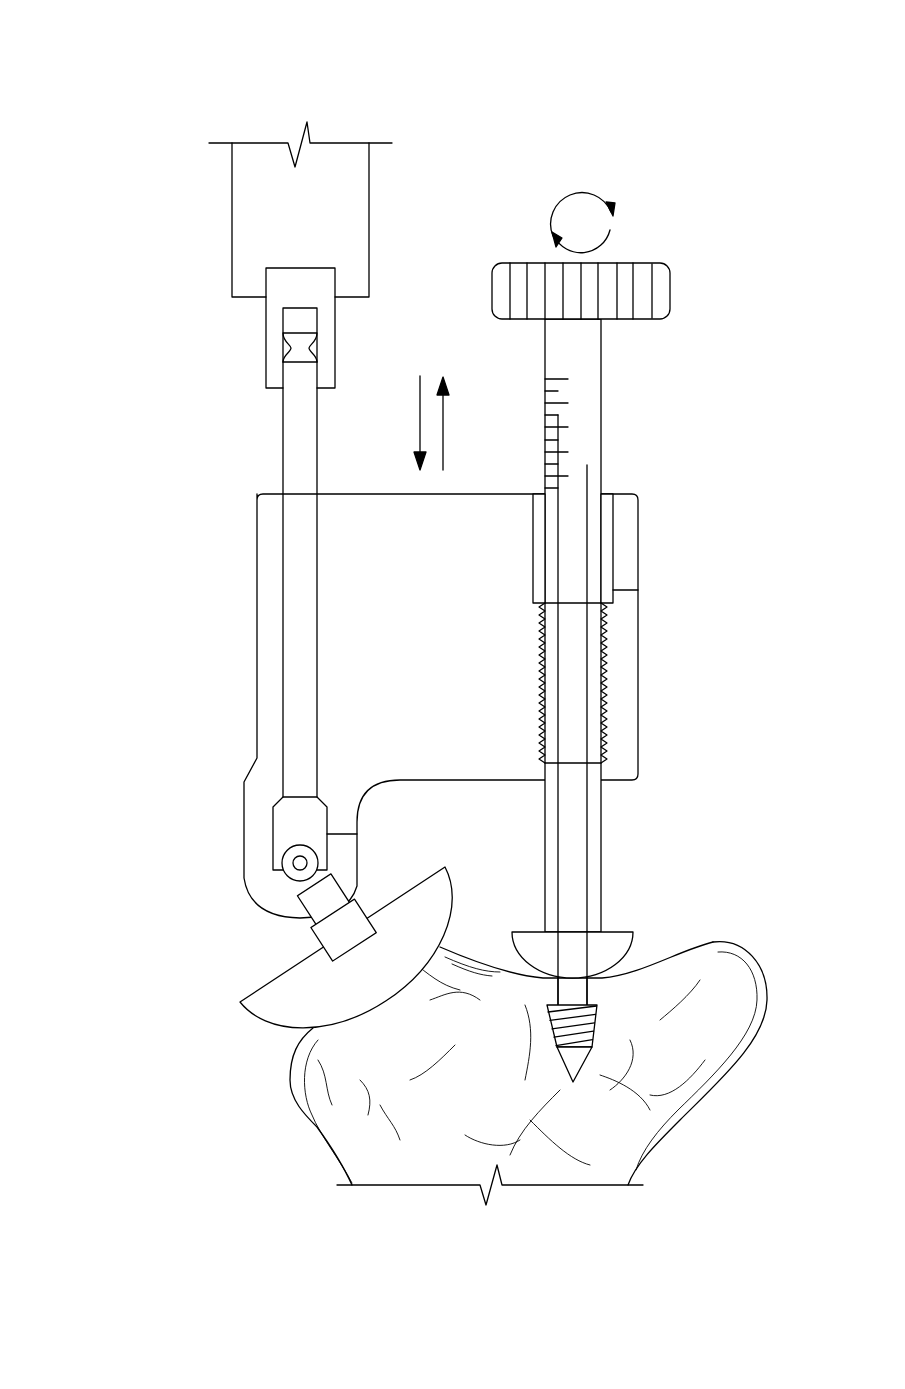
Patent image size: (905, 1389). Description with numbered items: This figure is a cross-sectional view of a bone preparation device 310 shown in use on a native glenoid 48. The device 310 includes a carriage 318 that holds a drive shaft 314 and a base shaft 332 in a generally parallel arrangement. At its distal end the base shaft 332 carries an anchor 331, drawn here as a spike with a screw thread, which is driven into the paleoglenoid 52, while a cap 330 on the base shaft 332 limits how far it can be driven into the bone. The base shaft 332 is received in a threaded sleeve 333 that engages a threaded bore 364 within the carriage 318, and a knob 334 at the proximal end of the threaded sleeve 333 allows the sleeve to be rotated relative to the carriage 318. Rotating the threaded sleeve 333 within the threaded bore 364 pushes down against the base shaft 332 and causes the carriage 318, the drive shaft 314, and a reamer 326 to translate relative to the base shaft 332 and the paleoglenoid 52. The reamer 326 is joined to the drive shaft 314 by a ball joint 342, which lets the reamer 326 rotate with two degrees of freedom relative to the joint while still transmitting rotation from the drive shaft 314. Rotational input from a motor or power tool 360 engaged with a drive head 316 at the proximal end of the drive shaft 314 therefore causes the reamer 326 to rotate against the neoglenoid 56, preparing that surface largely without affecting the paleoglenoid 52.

The bone preparation device 310 is at (124, 84).
The motor or power tool 360 is at (232, 213).
The drive head 316 is at (285, 363).
The drive shaft 314 is at (283, 470).
The carriage 318 is at (388, 494).
The ball joint 342 is at (281, 862).
The reamer 326 is at (277, 975).
The neoglenoid 56 is at (370, 1010).
The native glenoid 48 is at (278, 1113).
The paleoglenoid 52 is at (667, 958).
The anchor 331 is at (566, 1060).
The cap 330 is at (620, 940).
The knob 334 is at (645, 320).
The threaded sleeve 333 is at (598, 390).
The threaded bore 364 is at (604, 657).
The base shaft 332 is at (592, 725).